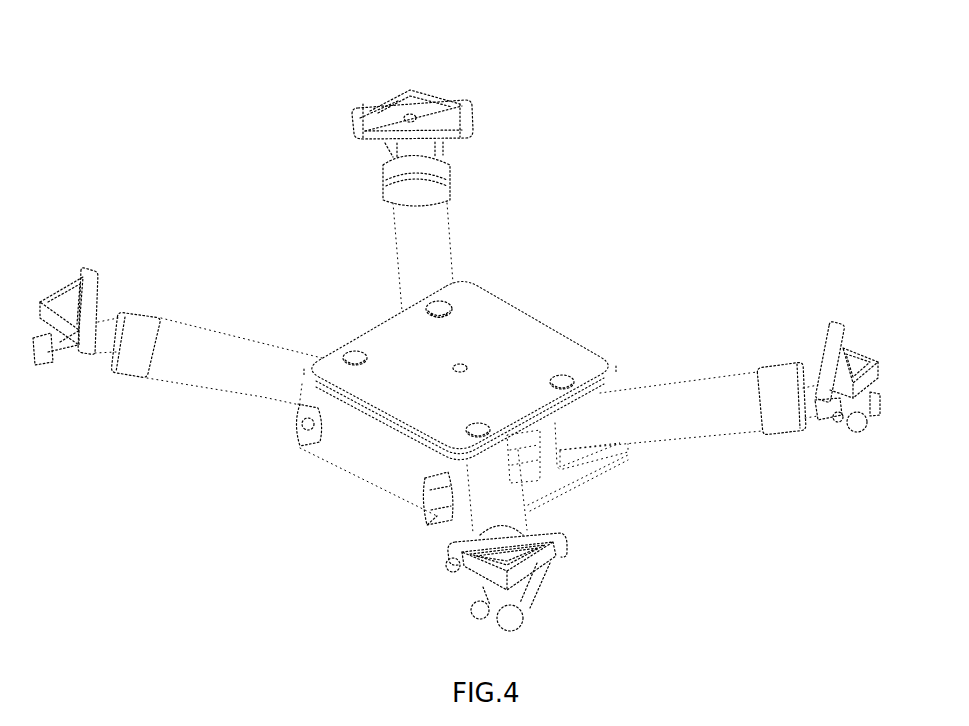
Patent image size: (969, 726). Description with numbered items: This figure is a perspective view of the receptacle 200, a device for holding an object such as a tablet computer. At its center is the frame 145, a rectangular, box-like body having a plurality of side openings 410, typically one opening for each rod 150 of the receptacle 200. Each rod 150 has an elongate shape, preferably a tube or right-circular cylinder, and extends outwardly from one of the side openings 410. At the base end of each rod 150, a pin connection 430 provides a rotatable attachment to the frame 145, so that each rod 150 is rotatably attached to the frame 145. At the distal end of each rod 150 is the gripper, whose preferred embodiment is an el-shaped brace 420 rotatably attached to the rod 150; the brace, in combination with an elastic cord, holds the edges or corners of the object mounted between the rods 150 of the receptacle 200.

The receptacle 200 is at (279, 156).
The frame 145 is at (517, 354).
The pin connection 430 is at (573, 370).
The rod 150 is at (660, 410).
The el-shaped brace 420 is at (853, 357).
The side openings 410 is at (287, 423).